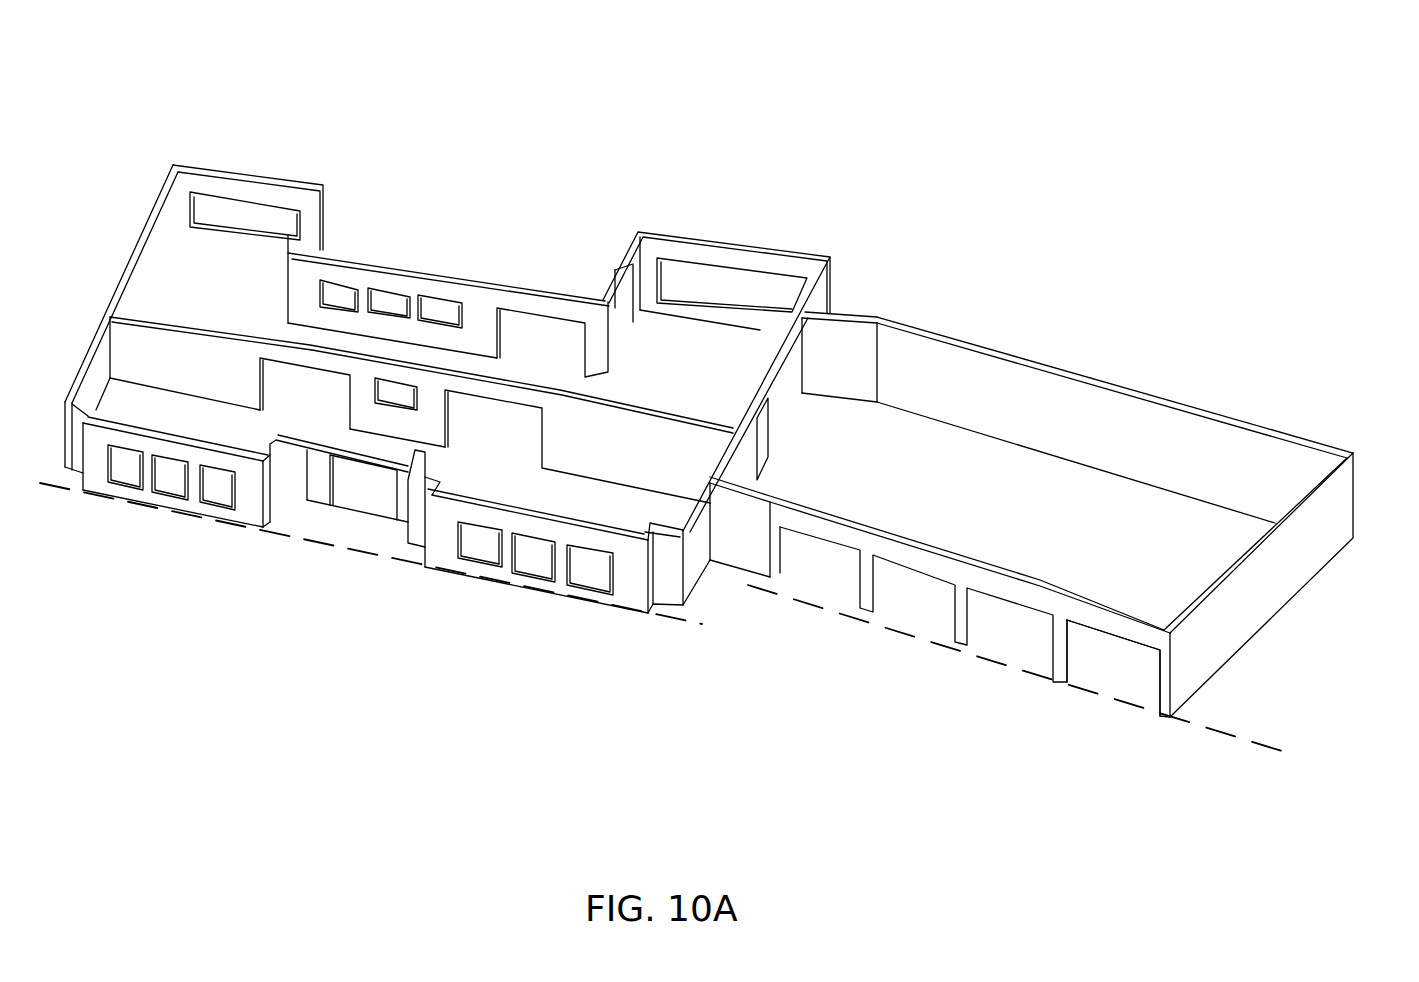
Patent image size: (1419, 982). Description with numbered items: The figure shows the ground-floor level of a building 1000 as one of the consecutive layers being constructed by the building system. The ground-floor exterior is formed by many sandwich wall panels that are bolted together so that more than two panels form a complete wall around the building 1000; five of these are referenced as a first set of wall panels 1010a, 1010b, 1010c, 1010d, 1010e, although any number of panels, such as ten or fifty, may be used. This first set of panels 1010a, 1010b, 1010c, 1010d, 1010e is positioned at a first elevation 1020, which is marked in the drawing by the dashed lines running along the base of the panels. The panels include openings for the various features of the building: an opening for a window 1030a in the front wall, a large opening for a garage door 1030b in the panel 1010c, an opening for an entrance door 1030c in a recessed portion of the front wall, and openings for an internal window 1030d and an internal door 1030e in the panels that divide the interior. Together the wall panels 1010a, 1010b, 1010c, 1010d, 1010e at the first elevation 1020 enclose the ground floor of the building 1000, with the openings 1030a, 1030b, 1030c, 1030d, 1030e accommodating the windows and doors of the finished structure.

The building 1000 is at (183, 62).
The wall panel 1010a is at (1092, 381).
The wall panel 1010b is at (1273, 538).
The wall panel 1010c is at (997, 600).
The wall panel 1010d is at (728, 562).
The wall panel 1010e is at (838, 313).
The first elevation 1020 is at (458, 572).
The window 1030a is at (222, 490).
The garage door 1030b is at (1108, 663).
The entrance door 1030c is at (370, 483).
The internal window 1030d is at (403, 390).
The internal door 1030e is at (768, 427).